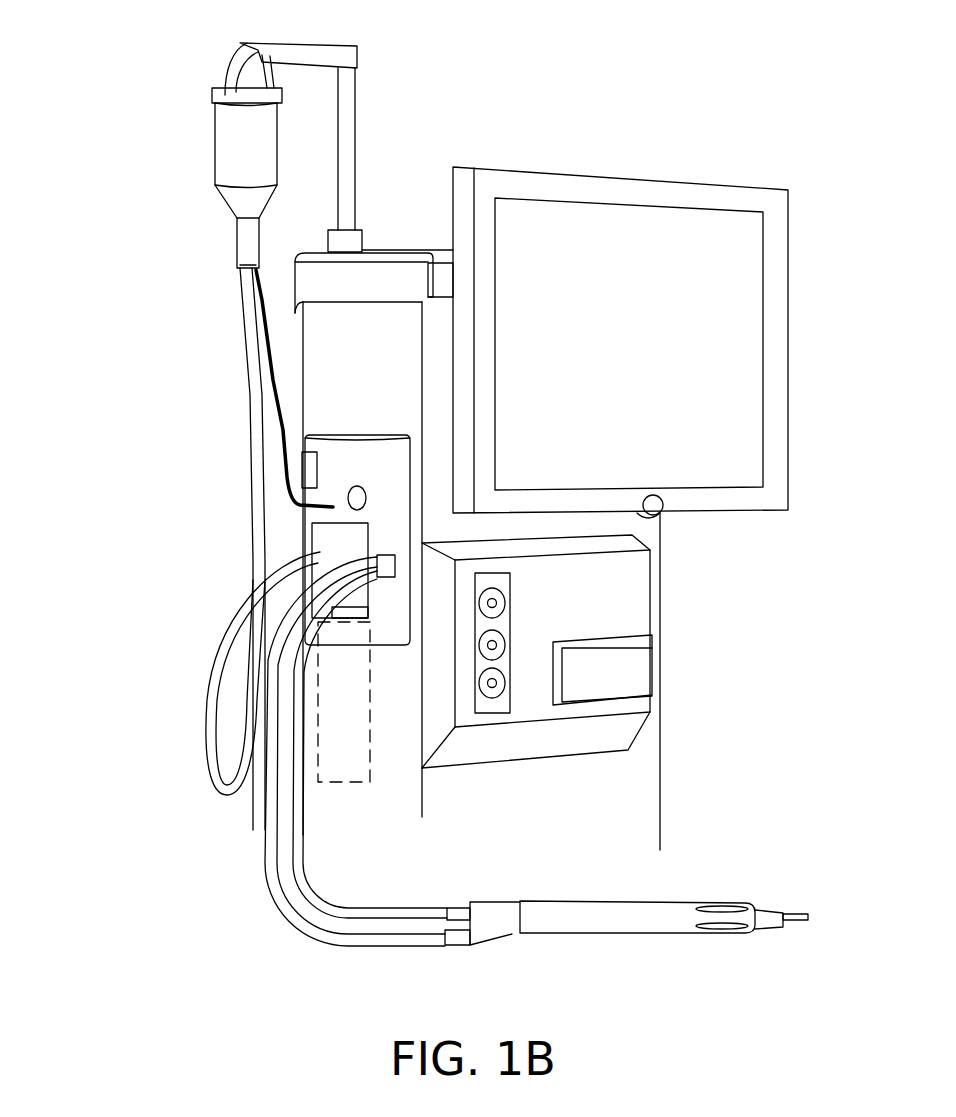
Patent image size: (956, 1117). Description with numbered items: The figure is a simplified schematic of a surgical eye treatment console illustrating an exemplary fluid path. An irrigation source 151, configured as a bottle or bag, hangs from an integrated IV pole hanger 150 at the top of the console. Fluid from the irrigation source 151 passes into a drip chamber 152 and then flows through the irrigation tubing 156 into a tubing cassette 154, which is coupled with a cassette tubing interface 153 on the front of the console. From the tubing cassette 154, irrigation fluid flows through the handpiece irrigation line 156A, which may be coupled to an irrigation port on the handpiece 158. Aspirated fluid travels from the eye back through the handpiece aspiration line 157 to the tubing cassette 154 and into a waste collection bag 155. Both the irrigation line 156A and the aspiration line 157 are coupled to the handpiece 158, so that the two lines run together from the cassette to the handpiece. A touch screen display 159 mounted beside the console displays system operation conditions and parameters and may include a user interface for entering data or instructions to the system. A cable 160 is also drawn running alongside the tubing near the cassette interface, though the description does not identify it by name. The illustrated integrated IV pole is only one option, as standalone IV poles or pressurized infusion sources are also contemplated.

The IV pole hanger 150 is at (223, 47).
The irrigation source 151 is at (200, 150).
The drip chamber 152 is at (228, 248).
The cassette tubing interface 153 is at (350, 468).
The tubing cassette 154 is at (340, 557).
The waste collection bag 155 is at (343, 717).
The irrigation tubing 156 is at (232, 318).
The handpiece irrigation line 156A is at (270, 890).
The handpiece aspiration line 157 is at (335, 887).
The handpiece 158 is at (688, 893).
The touch screen display 159 is at (698, 467).
The cable 160 is at (278, 423).